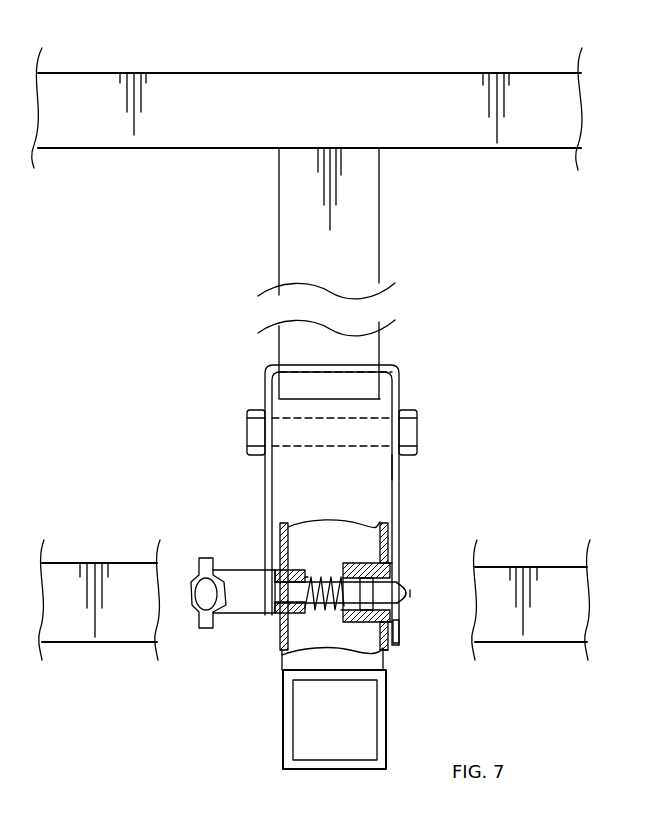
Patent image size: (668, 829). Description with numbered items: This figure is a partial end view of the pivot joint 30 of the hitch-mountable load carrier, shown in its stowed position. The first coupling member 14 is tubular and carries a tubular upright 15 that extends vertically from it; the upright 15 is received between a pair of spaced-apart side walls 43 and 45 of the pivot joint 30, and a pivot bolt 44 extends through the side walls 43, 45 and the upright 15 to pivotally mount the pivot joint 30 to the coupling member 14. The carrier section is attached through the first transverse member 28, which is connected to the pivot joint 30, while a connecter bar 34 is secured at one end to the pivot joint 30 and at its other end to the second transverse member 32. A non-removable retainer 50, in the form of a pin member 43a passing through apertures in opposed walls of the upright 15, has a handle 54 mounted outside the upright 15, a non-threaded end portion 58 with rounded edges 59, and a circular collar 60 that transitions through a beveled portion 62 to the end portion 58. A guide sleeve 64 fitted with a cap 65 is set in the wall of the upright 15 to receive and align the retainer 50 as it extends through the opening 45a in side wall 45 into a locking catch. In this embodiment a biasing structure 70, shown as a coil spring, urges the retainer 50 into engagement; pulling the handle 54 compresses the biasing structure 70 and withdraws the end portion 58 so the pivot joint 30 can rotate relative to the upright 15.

The second transverse member 32 is at (362, 85).
The connecter bar 34 is at (370, 243).
The pivot bolt 44 is at (408, 432).
The side wall 43 is at (257, 460).
The side wall 45 is at (400, 473).
The pivot joint 30 is at (399, 489).
The first transverse member 28 is at (118, 577).
The locking pin 43a is at (262, 574).
The handle 54 is at (268, 618).
The tubular upright 15 is at (287, 654).
The first coupling member 14 is at (392, 737).
The biasing structure 70 is at (328, 600).
The beveled portion 62 is at (400, 616).
The circular collar 60 is at (401, 550).
The non-threaded end portion 58 is at (411, 586).
The rounded edges 59 is at (414, 599).
The cap 65 is at (404, 537).
The hole in bracket side wall 45a is at (404, 628).
The guide sleeve 64 is at (388, 668).
The non-removable retainer 50 is at (188, 596).